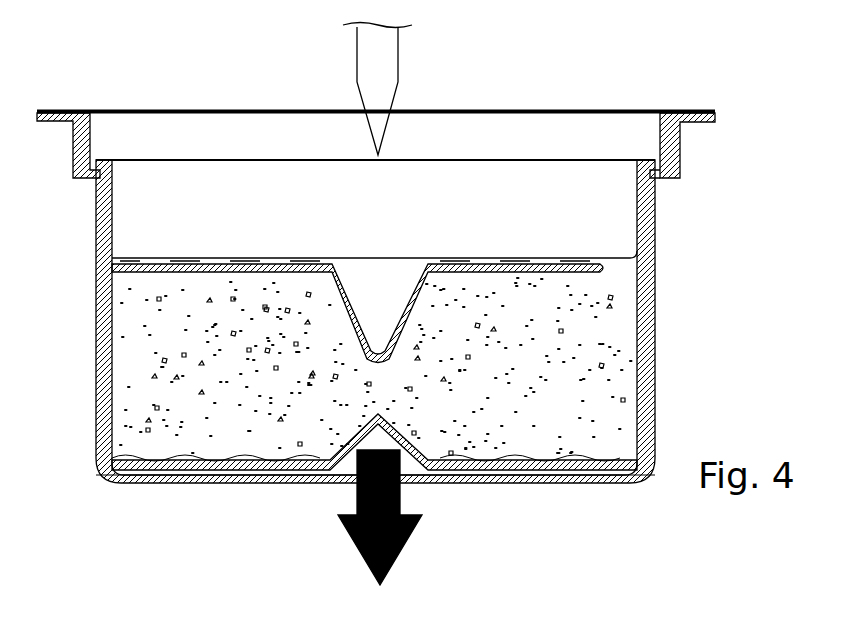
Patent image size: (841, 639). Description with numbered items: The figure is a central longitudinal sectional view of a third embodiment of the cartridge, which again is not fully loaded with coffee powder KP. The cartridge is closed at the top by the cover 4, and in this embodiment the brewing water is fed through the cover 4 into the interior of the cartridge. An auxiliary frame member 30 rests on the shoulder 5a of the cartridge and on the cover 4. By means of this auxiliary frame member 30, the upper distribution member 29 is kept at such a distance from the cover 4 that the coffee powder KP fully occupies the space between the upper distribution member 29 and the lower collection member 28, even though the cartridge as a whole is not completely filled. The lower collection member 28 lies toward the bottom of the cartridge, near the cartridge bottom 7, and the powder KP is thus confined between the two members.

The cover 4 is at (540, 108).
The shoulder 5a is at (665, 177).
The auxiliary frame member 30 is at (113, 205).
The upper distribution member 29 is at (512, 268).
The lower collection member 28 is at (540, 472).
The cup bottom 7 is at (475, 485).
The coffee powder KP is at (583, 365).